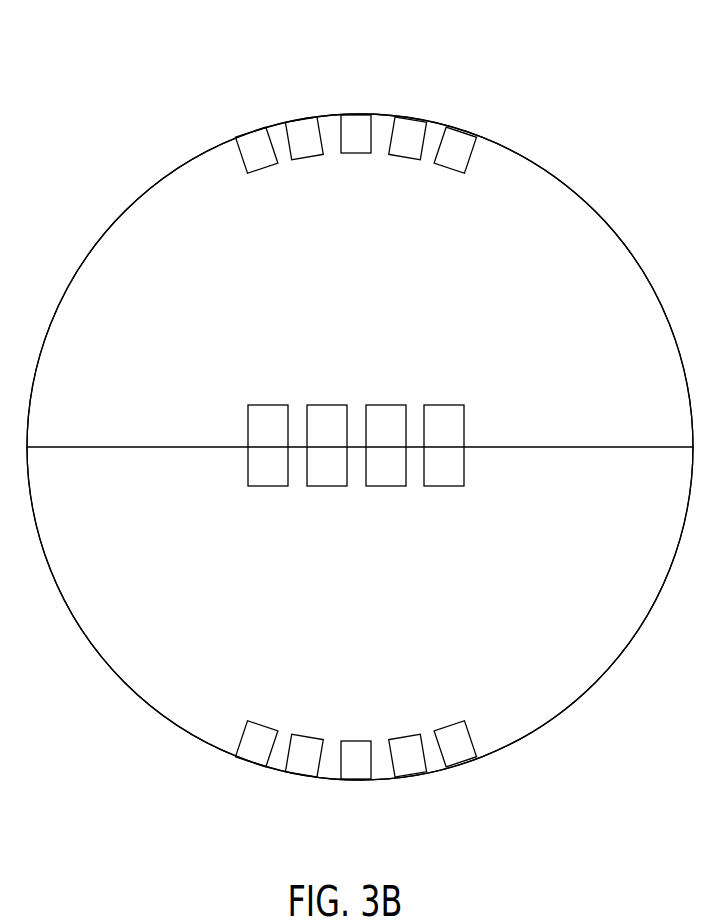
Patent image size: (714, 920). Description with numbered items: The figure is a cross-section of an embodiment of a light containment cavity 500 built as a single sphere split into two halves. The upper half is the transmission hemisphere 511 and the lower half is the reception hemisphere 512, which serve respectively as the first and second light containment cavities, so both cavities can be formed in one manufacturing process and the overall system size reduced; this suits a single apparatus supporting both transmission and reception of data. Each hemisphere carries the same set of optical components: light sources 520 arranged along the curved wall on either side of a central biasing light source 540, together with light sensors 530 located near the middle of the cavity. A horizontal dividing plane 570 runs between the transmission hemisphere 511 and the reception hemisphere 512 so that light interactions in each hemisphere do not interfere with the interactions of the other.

The light containment cavity 500 is at (623, 72).
The transmission hemisphere 511 is at (138, 205).
The reception hemisphere 512 is at (140, 687).
The light sources 520 is at (222, 130).
The light sensors 530 is at (268, 403).
The biasing light sources 540 is at (353, 113).
The dividing plane 570 is at (73, 445).